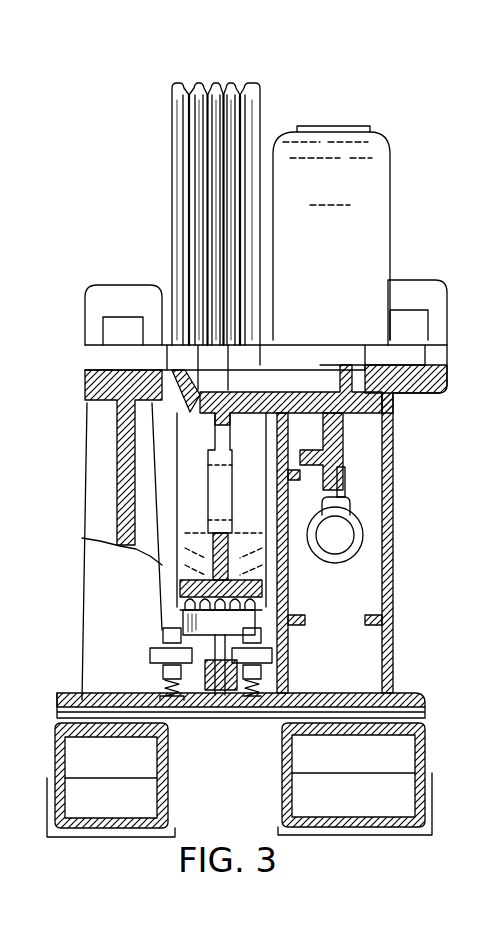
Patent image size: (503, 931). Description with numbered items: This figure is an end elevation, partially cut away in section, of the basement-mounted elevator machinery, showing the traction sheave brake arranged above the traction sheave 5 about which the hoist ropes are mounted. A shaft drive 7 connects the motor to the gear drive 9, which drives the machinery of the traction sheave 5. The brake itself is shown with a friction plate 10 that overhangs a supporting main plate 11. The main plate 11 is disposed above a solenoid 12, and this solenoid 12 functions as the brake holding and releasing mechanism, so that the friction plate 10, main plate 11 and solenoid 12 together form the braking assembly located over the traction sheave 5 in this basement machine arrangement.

The traction sheave 5 is at (262, 126).
The shaft drive 7 is at (362, 533).
The gear drive 9 is at (335, 448).
The friction plate 10 is at (257, 613).
The main plate 11 is at (237, 625).
The solenoid 12 is at (183, 697).